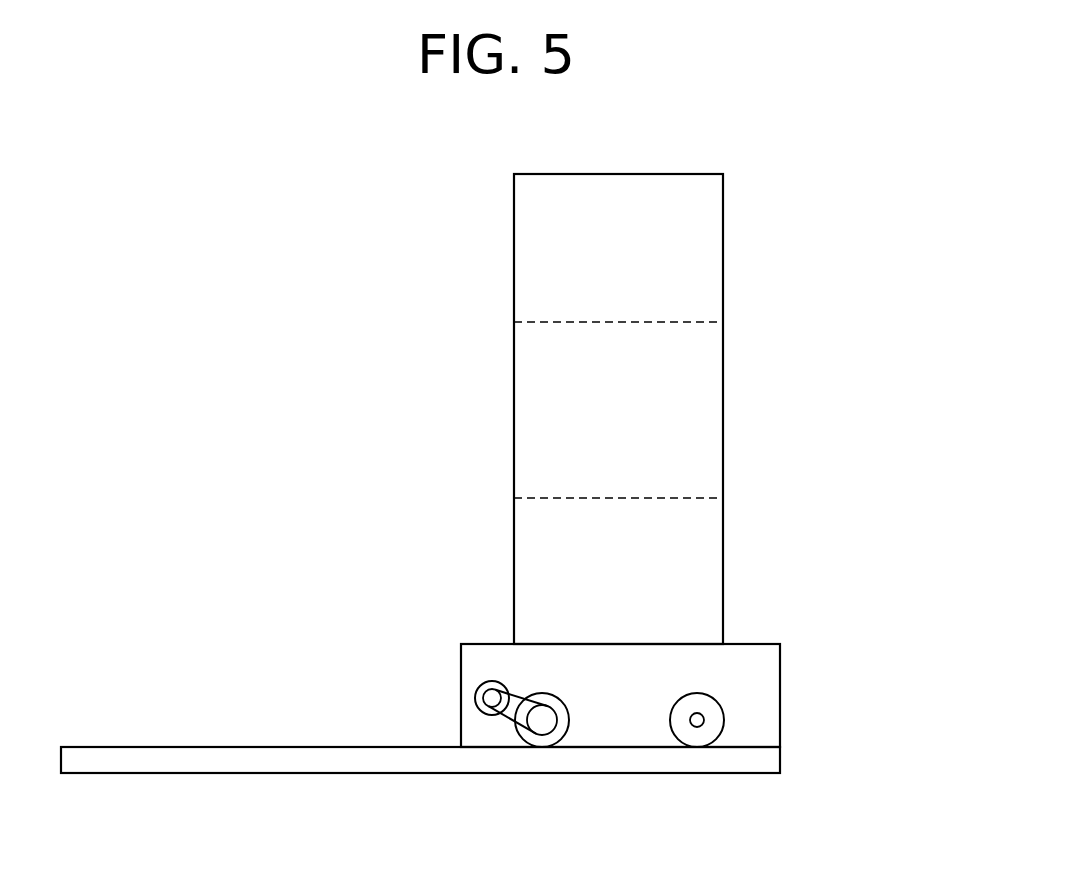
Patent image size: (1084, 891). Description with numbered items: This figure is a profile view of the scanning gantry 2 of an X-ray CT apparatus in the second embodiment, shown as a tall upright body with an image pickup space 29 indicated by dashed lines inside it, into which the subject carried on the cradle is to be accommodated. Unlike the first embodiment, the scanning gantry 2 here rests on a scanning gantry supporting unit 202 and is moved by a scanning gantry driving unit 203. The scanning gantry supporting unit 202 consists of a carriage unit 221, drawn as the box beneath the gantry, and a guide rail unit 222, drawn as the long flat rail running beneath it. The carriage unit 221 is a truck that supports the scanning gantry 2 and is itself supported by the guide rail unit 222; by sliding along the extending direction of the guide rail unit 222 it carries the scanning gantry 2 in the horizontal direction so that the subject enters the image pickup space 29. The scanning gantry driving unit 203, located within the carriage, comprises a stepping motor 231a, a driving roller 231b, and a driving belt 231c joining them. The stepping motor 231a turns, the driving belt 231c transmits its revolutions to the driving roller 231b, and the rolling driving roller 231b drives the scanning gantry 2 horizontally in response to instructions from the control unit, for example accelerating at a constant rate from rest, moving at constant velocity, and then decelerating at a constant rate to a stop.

The scanning gantry 2 is at (502, 193).
The image pickup space 29 is at (526, 322).
The scanning gantry supporting unit 202 is at (507, 708).
The carriage unit 221 is at (780, 673).
The guide rail unit 222 is at (465, 754).
The scanning gantry driving unit 203 is at (527, 781).
The stepping motor 231a is at (478, 712).
The driving roller 231b is at (567, 736).
The driving belt 231c is at (520, 751).